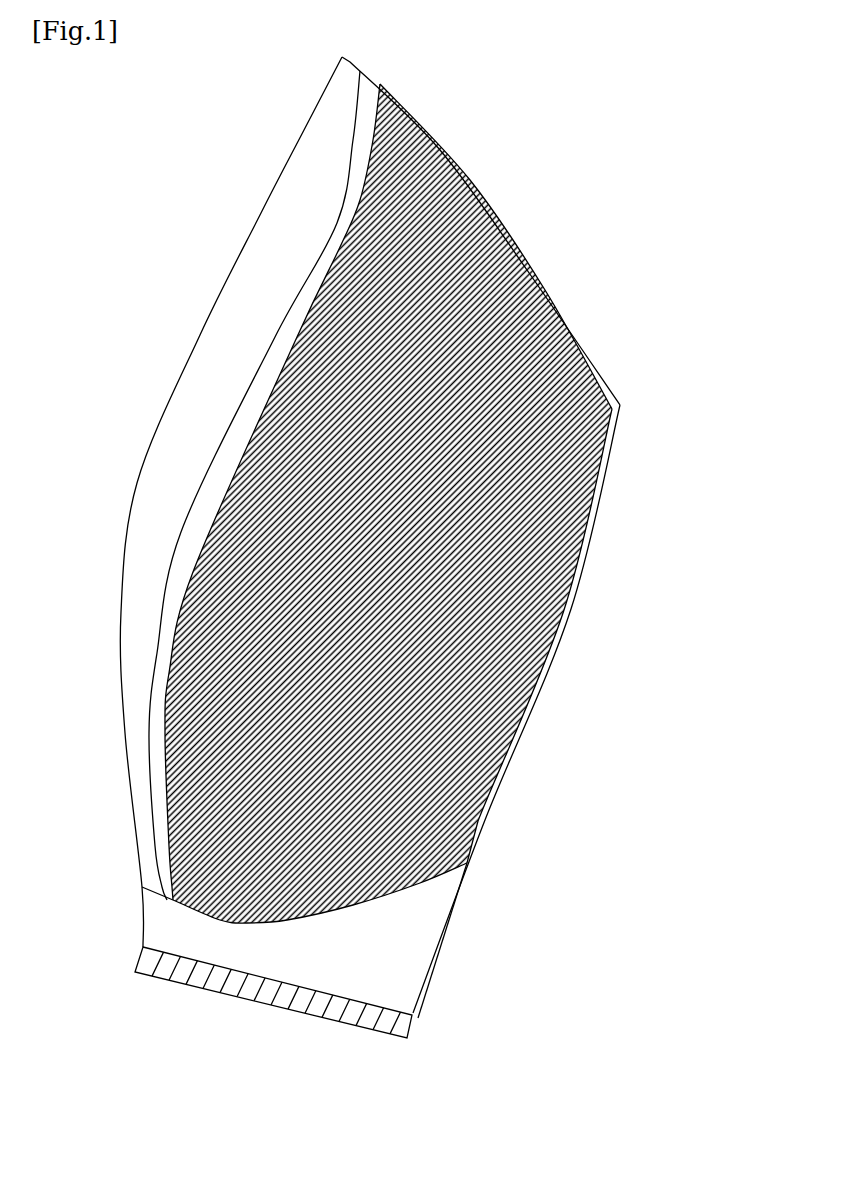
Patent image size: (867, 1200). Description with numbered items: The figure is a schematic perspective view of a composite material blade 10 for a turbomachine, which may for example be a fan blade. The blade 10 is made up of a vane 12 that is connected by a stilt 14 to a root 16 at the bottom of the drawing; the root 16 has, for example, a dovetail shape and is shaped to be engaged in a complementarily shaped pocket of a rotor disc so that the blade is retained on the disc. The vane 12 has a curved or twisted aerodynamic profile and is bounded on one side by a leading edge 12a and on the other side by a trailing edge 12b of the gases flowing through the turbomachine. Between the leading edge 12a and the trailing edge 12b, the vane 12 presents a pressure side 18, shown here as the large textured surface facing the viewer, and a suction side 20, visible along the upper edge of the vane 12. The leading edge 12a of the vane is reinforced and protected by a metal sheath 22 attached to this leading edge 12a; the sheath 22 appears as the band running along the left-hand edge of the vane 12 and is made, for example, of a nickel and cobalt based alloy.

The composite material blade 10 is at (672, 424).
The vane 12 is at (560, 323).
The leading edge 12a is at (133, 485).
The trailing edge 12b is at (524, 745).
The stilt 14 is at (403, 918).
The root 16 is at (413, 1020).
The pressure side 18 is at (564, 548).
The suction side 20 is at (590, 352).
The metal sheath 22 is at (185, 431).